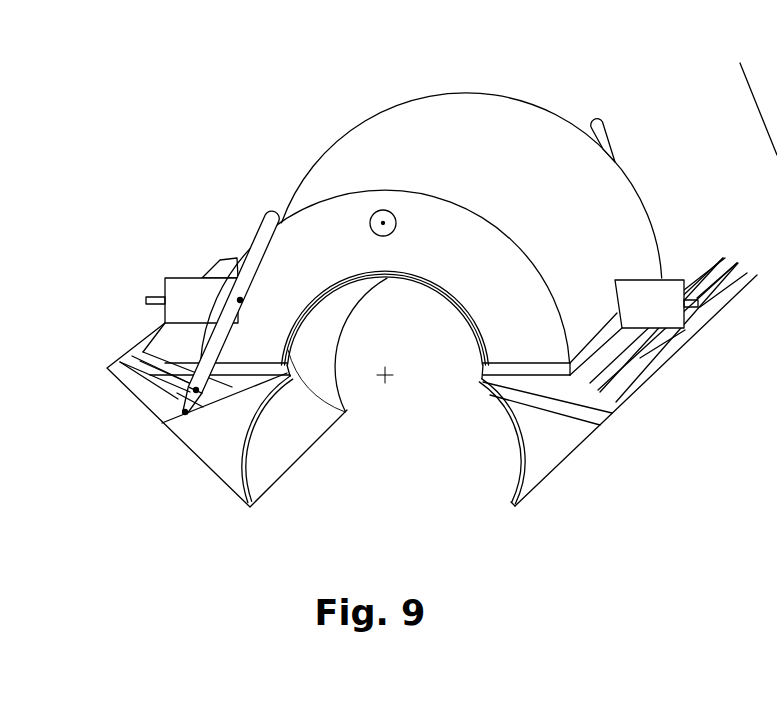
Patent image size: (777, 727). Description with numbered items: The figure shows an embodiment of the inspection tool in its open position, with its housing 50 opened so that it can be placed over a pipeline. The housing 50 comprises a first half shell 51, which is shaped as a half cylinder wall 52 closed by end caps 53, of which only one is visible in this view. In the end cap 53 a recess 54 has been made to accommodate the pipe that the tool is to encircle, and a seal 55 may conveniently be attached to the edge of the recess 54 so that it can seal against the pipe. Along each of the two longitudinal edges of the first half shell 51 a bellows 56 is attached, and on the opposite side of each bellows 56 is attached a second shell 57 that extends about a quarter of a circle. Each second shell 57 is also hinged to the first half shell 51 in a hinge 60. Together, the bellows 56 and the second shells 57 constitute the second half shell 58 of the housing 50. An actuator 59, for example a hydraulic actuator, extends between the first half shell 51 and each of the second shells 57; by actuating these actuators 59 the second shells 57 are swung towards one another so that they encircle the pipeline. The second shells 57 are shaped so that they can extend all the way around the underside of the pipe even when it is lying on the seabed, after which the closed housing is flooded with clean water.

The housing 50 is at (406, 204).
The first half shell 51 is at (542, 102).
The half cylinder wall 52 is at (548, 224).
The end cap 53 is at (445, 273).
The recess 54 is at (407, 315).
The seal 55 is at (330, 297).
The bellows 56 is at (125, 388).
The second shell 57 is at (210, 448).
The second half shell 58 is at (625, 437).
The actuator 59 is at (245, 252).
The hinge 60 is at (297, 375).